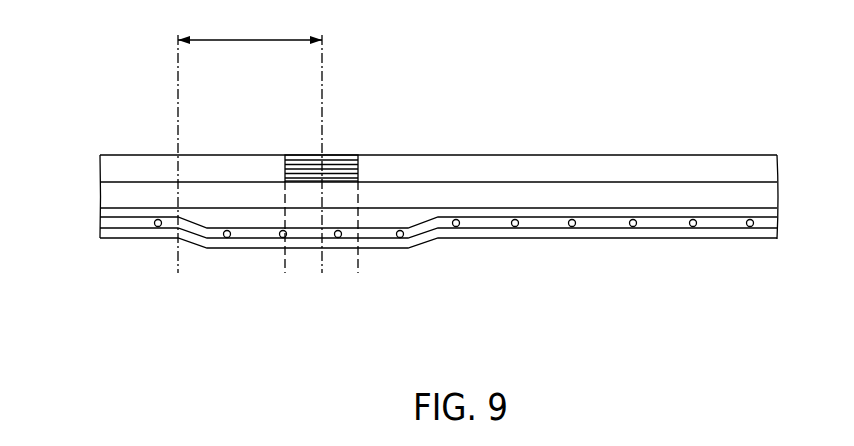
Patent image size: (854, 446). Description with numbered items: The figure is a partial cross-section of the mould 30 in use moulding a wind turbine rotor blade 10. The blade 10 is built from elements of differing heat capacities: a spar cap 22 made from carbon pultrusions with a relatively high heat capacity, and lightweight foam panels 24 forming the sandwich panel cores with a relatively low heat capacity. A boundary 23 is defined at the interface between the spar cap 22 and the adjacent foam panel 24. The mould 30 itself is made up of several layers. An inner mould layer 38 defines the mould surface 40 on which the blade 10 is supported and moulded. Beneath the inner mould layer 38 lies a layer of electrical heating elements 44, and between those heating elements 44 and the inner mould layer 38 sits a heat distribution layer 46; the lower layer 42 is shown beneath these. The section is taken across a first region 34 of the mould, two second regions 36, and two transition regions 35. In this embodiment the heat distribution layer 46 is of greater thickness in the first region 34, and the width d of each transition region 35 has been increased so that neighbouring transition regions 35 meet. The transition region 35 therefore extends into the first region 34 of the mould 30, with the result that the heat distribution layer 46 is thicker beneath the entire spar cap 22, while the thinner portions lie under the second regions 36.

The wind turbine rotor blade 10 is at (701, 143).
The spar cap 22 is at (342, 155).
The boundary 23 is at (358, 178).
The foam panel 24 is at (148, 160).
The mould 30 is at (70, 200).
The first region 34 is at (306, 282).
The transition region 35 is at (234, 270).
The second region 36 is at (123, 264).
The inner mould layer 38 is at (731, 192).
The mould surface 40 is at (515, 182).
The lower layer 42 is at (543, 225).
The electrical heating elements 44 is at (457, 228).
The heat distribution layer 46 is at (221, 215).